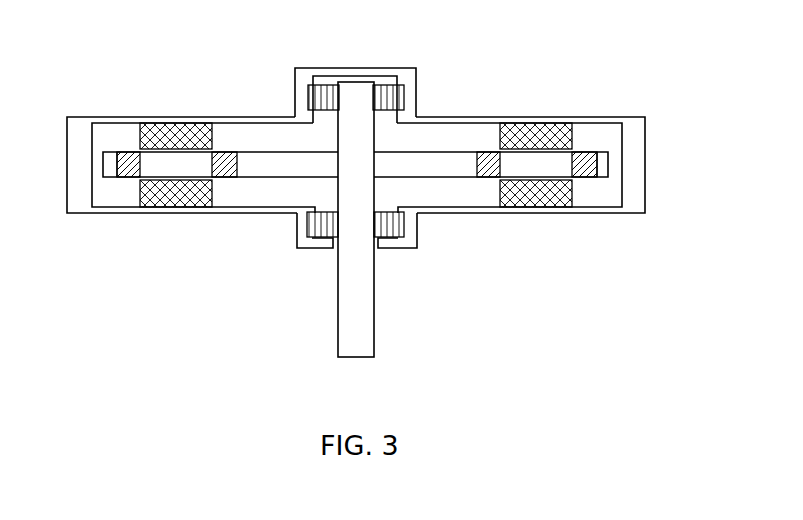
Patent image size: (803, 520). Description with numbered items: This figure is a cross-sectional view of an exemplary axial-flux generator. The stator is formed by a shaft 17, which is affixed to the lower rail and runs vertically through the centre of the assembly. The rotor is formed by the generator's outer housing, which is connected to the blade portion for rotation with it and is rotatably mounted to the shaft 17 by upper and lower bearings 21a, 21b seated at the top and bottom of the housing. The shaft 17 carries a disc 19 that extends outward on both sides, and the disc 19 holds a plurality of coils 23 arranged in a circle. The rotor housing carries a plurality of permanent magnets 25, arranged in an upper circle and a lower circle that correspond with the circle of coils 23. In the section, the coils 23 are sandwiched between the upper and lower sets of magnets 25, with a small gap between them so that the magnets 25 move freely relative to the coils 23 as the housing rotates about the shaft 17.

The shaft 17 is at (350, 288).
The disc 19 is at (300, 162).
The upper bearing 21a is at (386, 98).
The lower bearing 21b is at (395, 228).
The coils 23 is at (578, 168).
The permanent magnets 25 is at (178, 133).